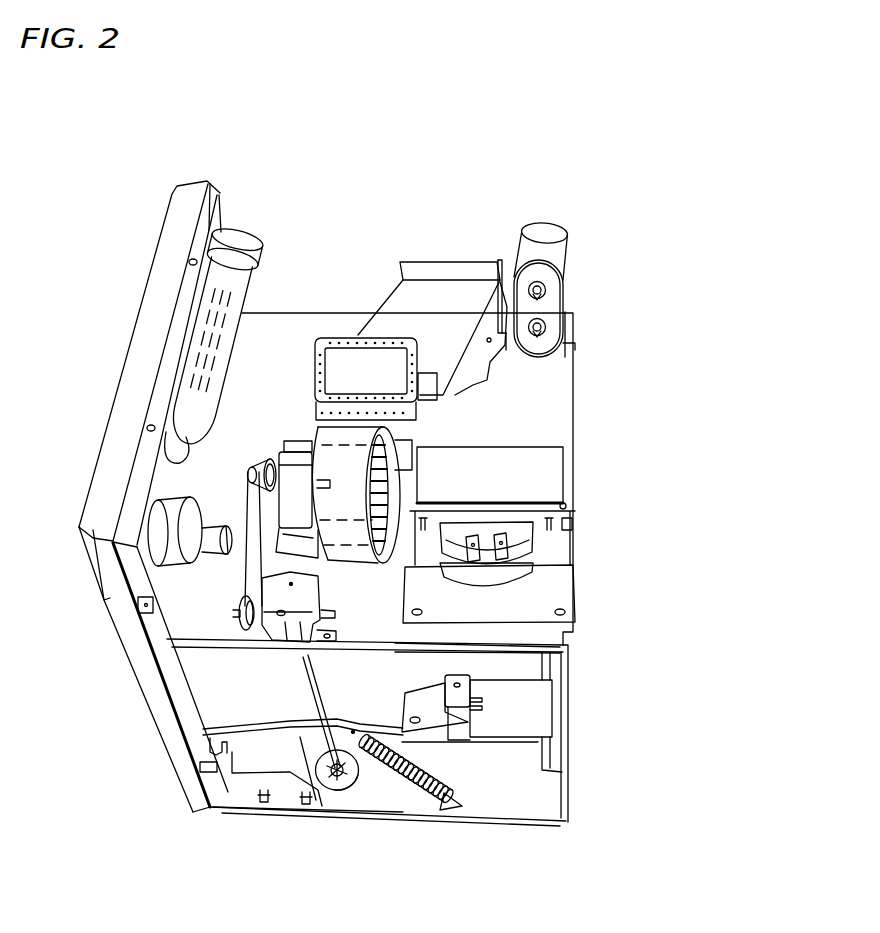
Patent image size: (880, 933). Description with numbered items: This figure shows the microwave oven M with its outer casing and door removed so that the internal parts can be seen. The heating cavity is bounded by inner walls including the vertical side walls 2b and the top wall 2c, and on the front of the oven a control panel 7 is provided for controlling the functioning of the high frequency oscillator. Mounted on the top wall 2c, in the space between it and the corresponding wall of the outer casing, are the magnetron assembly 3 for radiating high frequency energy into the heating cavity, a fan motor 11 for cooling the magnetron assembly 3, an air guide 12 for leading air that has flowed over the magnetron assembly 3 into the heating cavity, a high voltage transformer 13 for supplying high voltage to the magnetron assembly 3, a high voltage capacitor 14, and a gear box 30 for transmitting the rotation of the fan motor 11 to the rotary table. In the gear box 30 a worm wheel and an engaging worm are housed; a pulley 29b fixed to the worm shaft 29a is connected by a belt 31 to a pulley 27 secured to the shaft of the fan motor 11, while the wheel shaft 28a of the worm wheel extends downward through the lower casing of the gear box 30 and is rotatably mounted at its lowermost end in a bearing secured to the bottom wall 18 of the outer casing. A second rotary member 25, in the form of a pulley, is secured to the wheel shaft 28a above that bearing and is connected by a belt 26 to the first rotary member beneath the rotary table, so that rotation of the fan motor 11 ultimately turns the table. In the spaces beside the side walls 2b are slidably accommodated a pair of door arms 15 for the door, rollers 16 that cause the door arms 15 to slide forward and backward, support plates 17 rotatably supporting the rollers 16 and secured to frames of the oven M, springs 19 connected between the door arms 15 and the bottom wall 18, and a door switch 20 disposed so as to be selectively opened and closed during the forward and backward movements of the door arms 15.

The microwave oven M is at (534, 181).
The side walls 2b is at (515, 668).
The top wall 2c is at (530, 395).
The magnetron assembly 3 is at (360, 372).
The control panel 7 is at (80, 549).
The fan motor 11 is at (312, 440).
The air guide 12 is at (432, 290).
The high voltage transformer 13 is at (520, 475).
The high voltage capacitor 14 is at (553, 294).
The door arms 15 is at (262, 736).
The rollers 16 is at (207, 748).
The support plates 17 is at (283, 780).
The bottom wall 18 is at (540, 793).
The springs 19 is at (417, 793).
The door switch 20 is at (463, 717).
The second rotary member 25 is at (333, 780).
The belt 26 is at (370, 778).
The pulley 27 is at (246, 474).
The wheel shaft 28a is at (265, 736).
The worm shaft 29a is at (281, 613).
The pulley 29b is at (234, 612).
The gear box 30 is at (305, 661).
The belt 31 is at (242, 558).